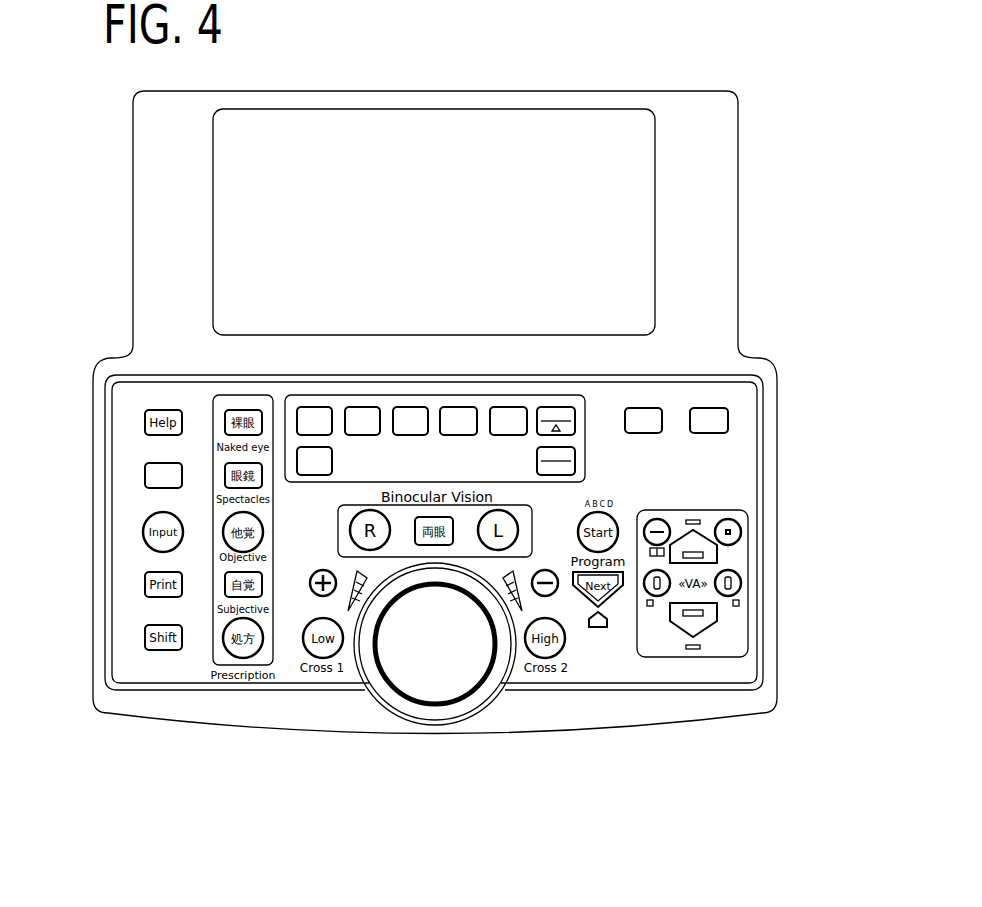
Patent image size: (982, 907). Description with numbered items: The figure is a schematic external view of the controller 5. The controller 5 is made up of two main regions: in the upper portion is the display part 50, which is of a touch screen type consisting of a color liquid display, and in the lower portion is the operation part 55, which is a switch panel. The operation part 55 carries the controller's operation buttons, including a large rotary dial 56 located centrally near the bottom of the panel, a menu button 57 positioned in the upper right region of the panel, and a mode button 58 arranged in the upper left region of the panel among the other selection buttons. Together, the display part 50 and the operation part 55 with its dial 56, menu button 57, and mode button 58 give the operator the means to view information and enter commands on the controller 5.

The controller 5 is at (766, 147).
The display part 50 is at (253, 193).
The operation part 55 is at (723, 480).
The dial 56 is at (442, 665).
The menu button 57 is at (662, 410).
The mode button 58 is at (312, 483).